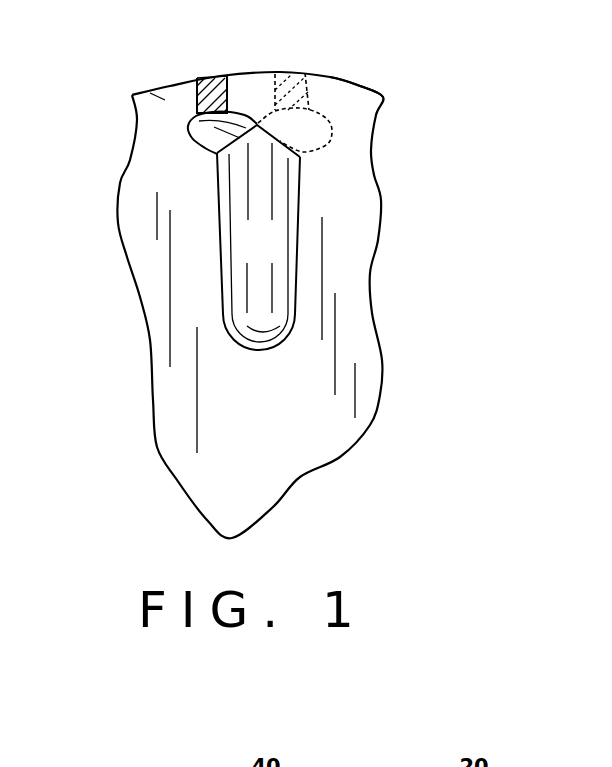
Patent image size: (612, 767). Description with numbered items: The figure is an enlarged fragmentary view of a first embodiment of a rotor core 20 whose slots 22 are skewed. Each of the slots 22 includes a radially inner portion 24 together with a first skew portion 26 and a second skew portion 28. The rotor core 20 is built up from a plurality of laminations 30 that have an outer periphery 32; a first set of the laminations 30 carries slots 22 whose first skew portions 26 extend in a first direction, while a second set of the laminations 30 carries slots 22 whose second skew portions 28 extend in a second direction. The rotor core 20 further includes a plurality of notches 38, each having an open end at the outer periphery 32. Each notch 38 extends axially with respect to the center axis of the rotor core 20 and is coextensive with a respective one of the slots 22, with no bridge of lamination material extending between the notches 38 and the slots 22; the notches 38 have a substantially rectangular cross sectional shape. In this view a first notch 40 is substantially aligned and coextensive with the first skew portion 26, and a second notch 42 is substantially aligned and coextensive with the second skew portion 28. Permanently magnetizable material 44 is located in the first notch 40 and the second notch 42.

The rotor core 20 is at (352, 256).
The slots 22 is at (216, 285).
The radially inner portion 24 is at (243, 253).
The first skew portion 26 is at (188, 130).
The second skew portion 28 is at (318, 147).
The laminations 30 is at (355, 342).
The outer periphery 32 is at (372, 95).
The notches 38 is at (197, 103).
The first notch 40 is at (228, 88).
The second notch 42 is at (275, 74).
The permanently magnetizable material 44 is at (200, 78).